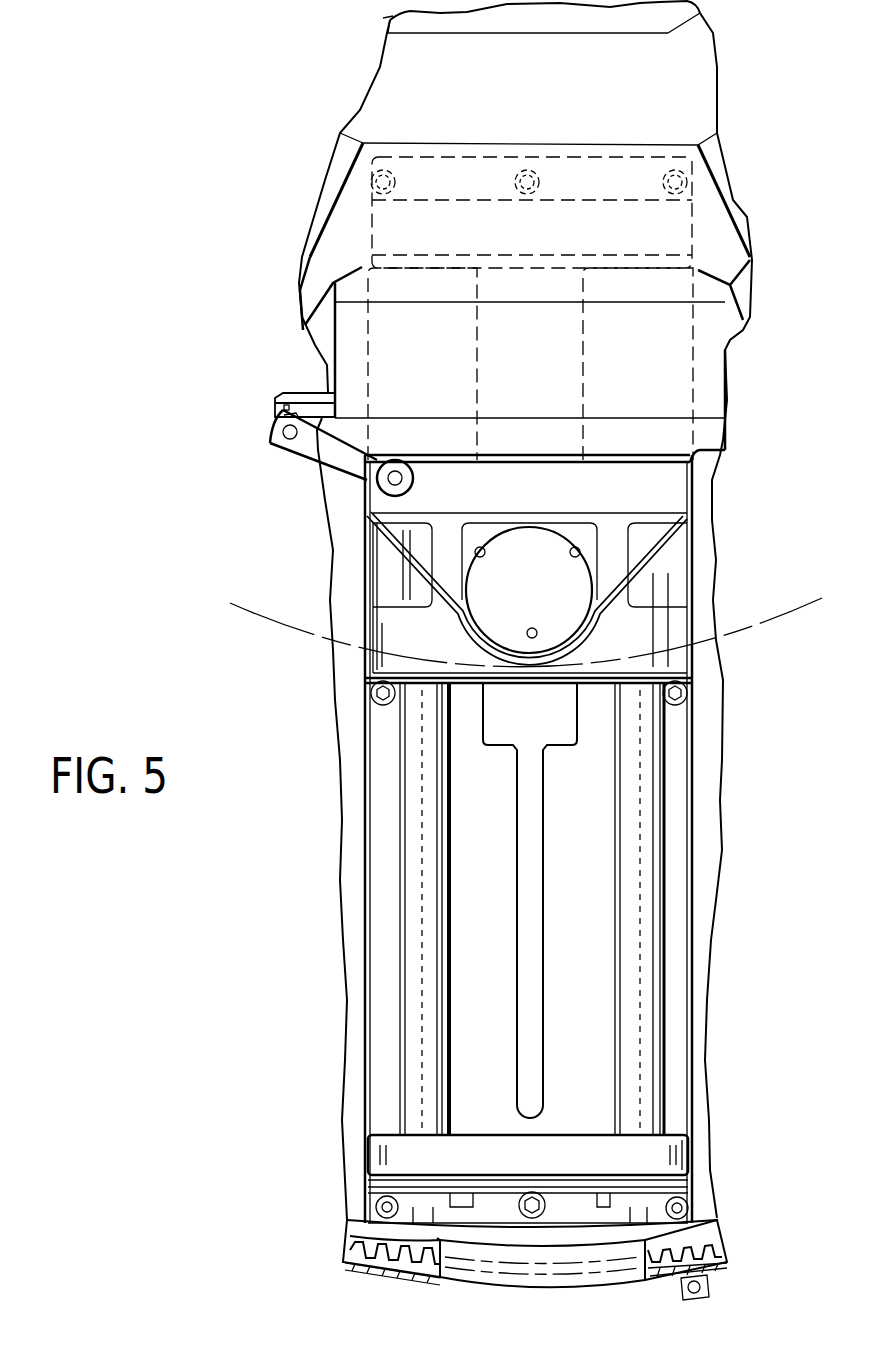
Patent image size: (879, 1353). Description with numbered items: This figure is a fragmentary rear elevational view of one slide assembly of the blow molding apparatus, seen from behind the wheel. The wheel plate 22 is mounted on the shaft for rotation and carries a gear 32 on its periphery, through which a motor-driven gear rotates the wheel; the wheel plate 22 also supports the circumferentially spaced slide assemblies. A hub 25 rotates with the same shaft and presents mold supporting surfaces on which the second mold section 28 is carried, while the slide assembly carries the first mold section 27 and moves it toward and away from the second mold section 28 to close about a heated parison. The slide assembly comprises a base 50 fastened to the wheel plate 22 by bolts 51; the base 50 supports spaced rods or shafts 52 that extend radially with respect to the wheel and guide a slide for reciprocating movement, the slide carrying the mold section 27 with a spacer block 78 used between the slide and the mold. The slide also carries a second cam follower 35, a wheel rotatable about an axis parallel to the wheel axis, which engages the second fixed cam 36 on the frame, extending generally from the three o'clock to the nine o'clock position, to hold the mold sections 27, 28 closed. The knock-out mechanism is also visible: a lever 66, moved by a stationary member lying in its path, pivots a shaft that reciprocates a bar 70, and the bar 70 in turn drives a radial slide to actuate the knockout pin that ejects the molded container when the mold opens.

The wheel plate 22 is at (702, 847).
The hub 25 is at (383, 18).
The first mold section 27 is at (535, 237).
The second mold section 28 is at (536, 101).
The gear 32 is at (345, 1230).
The second cam follower 35 is at (583, 638).
The second fixed cam 36 is at (777, 617).
The base 50 is at (604, 212).
The bolts 51 is at (502, 177).
The rods or shafts 52 is at (420, 888).
The lever 66 is at (323, 447).
The bar 70 is at (303, 400).
The spacer block 78 is at (537, 380).